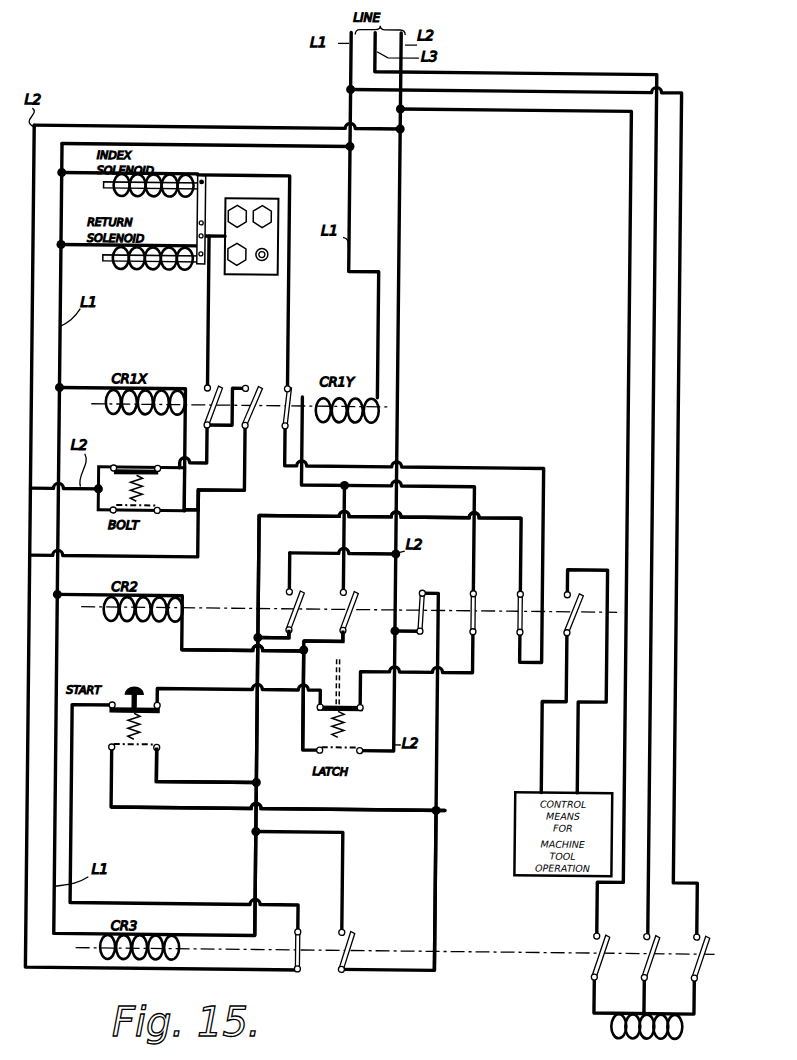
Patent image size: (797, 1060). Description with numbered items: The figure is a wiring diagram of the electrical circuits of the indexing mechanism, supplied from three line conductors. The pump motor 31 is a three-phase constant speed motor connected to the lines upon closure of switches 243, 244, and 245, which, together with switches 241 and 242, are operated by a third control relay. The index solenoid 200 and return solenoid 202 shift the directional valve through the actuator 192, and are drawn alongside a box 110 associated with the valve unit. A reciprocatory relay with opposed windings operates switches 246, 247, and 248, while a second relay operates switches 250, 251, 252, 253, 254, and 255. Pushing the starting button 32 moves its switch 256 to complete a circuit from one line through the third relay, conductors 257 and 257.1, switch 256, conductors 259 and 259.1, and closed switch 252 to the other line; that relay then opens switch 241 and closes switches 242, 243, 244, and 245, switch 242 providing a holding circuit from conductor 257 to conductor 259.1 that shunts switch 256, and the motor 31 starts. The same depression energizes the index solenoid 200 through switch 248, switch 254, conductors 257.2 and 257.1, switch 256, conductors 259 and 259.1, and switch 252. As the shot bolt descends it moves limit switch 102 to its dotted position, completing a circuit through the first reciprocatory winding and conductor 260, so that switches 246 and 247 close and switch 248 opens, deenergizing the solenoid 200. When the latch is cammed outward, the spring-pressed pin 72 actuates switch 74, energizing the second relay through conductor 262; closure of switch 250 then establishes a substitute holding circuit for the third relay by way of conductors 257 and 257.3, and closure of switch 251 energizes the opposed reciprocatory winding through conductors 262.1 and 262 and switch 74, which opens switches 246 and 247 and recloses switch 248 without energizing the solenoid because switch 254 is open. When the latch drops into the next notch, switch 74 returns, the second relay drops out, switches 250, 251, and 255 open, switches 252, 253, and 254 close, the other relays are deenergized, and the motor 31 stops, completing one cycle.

The actuator 192 is at (208, 235).
The control unit 110 is at (253, 203).
The index solenoid 200 is at (153, 194).
The return solenoid 202 is at (137, 273).
The switch 246 is at (212, 389).
The switch 247 is at (260, 390).
The switch 248 is at (292, 389).
The limit switch 102 is at (136, 470).
The conductor 260 is at (198, 493).
The conductor 257.2 is at (292, 513).
The switch 250 is at (318, 586).
The switch 251 is at (371, 589).
The switch 252 is at (420, 594).
The switch 253 is at (473, 599).
The switch 254 is at (520, 598).
The switch 255 is at (568, 590).
The conductor 257.3 is at (276, 628).
The conductor 262 is at (216, 644).
The conductor 262.1 is at (331, 650).
The spring-pressed pin 72 is at (344, 679).
The switch 74 is at (348, 716).
The starting button 32 is at (141, 695).
The switch 256 is at (152, 715).
The conductor 257 is at (257, 718).
The conductor 257.1 is at (197, 782).
The conductor 259 is at (345, 813).
The conductor 259.1 is at (442, 800).
The switch 241 is at (302, 973).
The switch 242 is at (350, 972).
The switch 243 is at (595, 973).
The switch 244 is at (661, 960).
The switch 245 is at (708, 976).
The motor 31 is at (610, 1034).